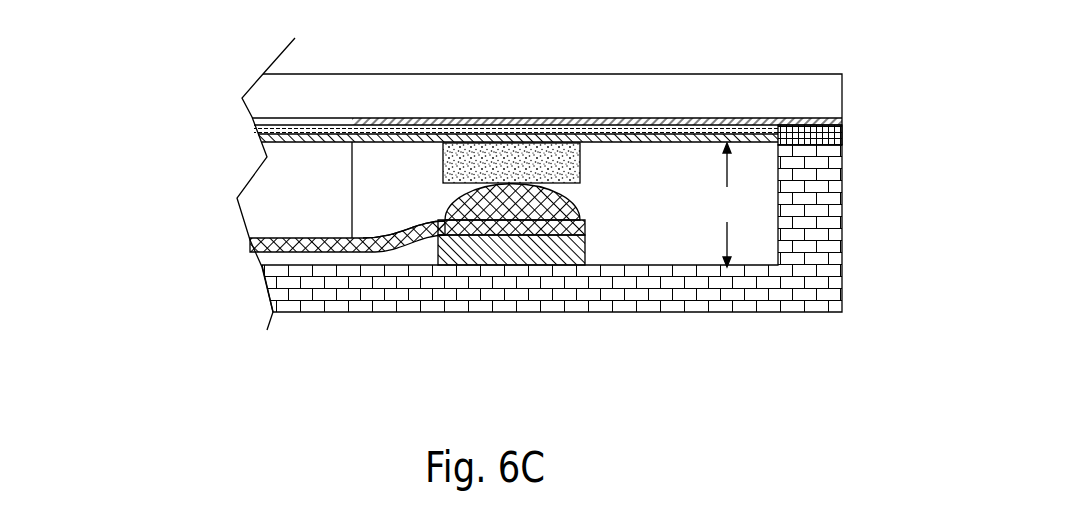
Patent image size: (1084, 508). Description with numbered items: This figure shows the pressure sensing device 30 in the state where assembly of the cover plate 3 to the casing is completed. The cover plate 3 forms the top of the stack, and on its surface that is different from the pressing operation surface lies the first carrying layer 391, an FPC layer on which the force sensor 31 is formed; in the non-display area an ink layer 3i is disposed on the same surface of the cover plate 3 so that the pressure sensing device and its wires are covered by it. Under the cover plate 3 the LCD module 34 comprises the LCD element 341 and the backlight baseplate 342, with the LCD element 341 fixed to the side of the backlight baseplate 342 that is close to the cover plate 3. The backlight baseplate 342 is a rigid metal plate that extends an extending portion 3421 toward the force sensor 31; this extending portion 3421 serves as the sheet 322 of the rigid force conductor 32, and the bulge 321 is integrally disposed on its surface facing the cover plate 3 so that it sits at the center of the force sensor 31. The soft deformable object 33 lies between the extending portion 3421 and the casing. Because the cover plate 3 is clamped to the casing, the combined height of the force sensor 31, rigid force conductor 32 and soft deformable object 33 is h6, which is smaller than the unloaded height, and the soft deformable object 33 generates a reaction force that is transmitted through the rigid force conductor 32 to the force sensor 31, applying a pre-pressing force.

The pressure sensing device 30 is at (537, 31).
The cover plate 3 is at (855, 73).
The ink layer 3i is at (843, 123).
The first carrying layer 391 is at (258, 135).
The force sensor 31 is at (578, 166).
The rigid force conductor 32 is at (658, 190).
The bulge 321 is at (578, 207).
The sheet 322 is at (580, 228).
The soft deformable object 33 is at (585, 259).
The LCD module 34 is at (127, 198).
The LCD element 341 is at (273, 187).
The backlight baseplate 342 is at (253, 240).
The extending portion 3421 is at (444, 222).
The height of the force sensor, rigid force conductor and soft deformable object aft h6 is at (731, 205).